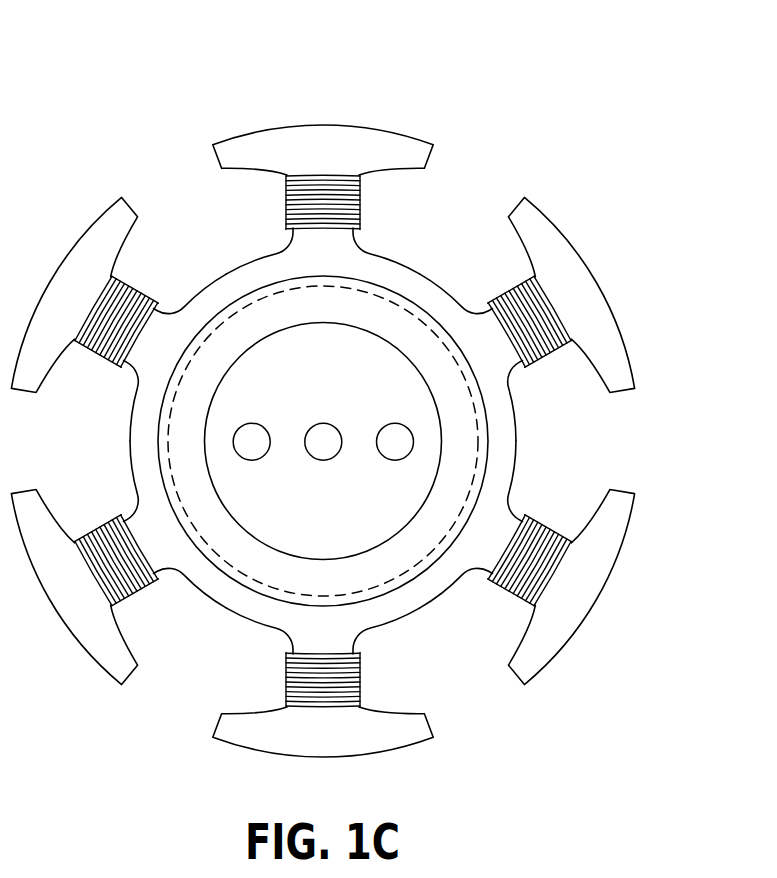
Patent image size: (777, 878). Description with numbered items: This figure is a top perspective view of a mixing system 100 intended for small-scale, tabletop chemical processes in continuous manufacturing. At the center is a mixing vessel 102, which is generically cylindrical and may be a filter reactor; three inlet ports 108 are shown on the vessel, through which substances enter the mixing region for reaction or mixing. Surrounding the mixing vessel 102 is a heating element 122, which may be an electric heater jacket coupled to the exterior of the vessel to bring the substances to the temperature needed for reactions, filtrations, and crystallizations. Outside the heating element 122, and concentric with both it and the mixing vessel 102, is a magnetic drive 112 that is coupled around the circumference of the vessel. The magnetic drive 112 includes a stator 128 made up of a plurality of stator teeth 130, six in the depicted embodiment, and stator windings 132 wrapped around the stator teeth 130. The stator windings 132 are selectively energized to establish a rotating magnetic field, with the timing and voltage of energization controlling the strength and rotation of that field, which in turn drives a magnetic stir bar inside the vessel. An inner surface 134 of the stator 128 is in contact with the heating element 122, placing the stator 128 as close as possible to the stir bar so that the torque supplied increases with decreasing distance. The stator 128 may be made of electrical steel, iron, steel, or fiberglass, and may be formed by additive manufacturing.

The mixing system 100 is at (106, 38).
The mixing vessel 102 is at (322, 560).
The inlet ports 108 is at (387, 433).
The magnetic drive 112 is at (650, 460).
The heating element 122 is at (198, 533).
The stator 128 is at (502, 465).
The stator teeth 130 is at (583, 305).
The stator windings 132 is at (107, 367).
The inner surface 134 is at (218, 573).